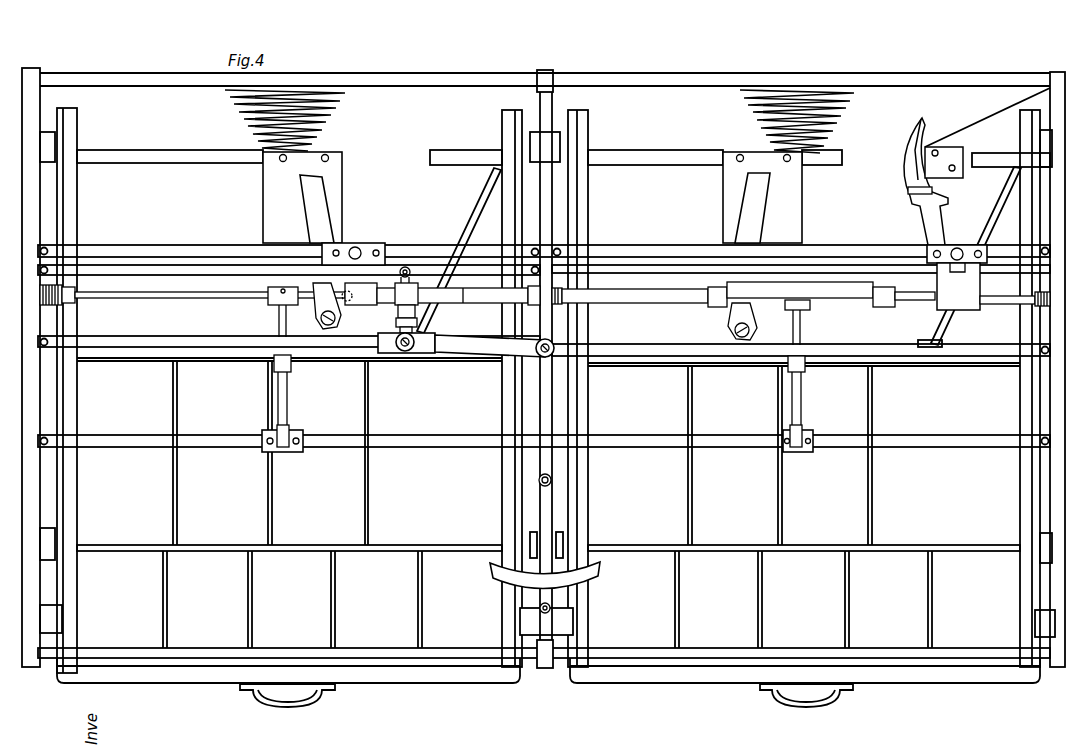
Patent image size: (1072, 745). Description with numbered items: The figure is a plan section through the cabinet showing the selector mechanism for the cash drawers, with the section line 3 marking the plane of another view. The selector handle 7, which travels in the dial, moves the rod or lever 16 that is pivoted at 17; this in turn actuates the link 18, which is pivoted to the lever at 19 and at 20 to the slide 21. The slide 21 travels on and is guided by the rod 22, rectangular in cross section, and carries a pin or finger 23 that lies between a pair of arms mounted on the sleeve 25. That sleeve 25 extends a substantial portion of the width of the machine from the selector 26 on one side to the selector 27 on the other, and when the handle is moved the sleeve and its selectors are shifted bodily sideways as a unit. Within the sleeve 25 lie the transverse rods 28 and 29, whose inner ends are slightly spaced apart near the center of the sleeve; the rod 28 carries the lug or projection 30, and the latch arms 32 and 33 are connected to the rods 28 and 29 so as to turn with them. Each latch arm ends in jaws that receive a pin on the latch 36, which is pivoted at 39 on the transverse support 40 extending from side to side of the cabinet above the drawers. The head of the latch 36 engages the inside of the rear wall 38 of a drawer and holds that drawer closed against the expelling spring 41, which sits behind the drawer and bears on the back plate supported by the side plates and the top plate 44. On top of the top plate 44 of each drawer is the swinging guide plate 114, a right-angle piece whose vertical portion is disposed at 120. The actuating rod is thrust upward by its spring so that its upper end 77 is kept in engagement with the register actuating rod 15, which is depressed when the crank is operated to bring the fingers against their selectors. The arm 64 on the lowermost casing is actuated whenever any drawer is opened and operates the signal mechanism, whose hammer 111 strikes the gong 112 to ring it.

The section line 3- 3 is at (119, 744).
The selector handle 7 is at (553, 609).
The register actuating rod 15 is at (405, 400).
The rod or lever 16 is at (553, 510).
The pivot 17 is at (553, 479).
The link 18 is at (457, 342).
The pivot 19 is at (551, 342).
The pivot 20 is at (400, 352).
The slide 21 is at (398, 312).
The rod 22 is at (186, 338).
The pin or finger 23 is at (398, 323).
The sleeve 25 is at (643, 298).
The selector 26 is at (350, 303).
The selector 27 is at (960, 298).
The rod 28 is at (1012, 300).
The rod 29 is at (147, 297).
The lug or projection 30 is at (986, 306).
The latch arm 32 is at (802, 330).
The latch arm 33 is at (277, 320).
The latch 36 is at (289, 392).
The rear wall 38 is at (192, 360).
The pivot 39 is at (300, 431).
The transverse support 40 is at (312, 447).
The expelling spring 41 is at (325, 130).
The top plate 44 is at (290, 220).
The arm 64 is at (926, 225).
The upper end of actuating rod 77 is at (360, 245).
The hammer 111 is at (930, 145).
The gong 112 is at (915, 138).
The swinging guide plate 114 is at (308, 192).
The vertical portion of guide plate 120 is at (334, 210).